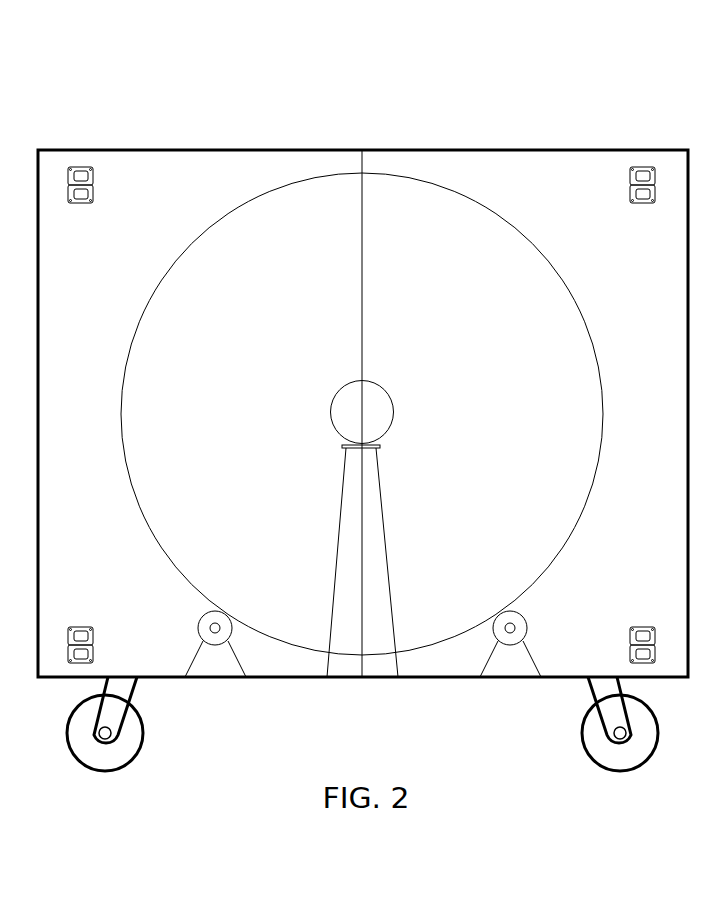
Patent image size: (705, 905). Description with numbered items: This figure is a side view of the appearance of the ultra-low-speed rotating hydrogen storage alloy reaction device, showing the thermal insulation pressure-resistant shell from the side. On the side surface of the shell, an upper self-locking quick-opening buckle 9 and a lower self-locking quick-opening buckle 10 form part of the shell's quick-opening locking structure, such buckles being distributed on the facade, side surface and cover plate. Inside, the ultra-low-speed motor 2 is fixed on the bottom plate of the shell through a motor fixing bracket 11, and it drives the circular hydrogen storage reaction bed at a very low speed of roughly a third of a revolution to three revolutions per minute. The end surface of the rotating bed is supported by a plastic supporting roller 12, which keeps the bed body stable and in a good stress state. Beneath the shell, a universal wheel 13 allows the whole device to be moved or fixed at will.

The ultra-low-speed motor 2 is at (340, 240).
The upper self-locking quick-opening buckle 9 is at (101, 118).
The lower self-locking quick-opening buckle 10 is at (154, 348).
The motor fixing bracket 11 is at (378, 355).
The plastic supporting roller 12 is at (512, 355).
The universal wheel 13 is at (620, 402).